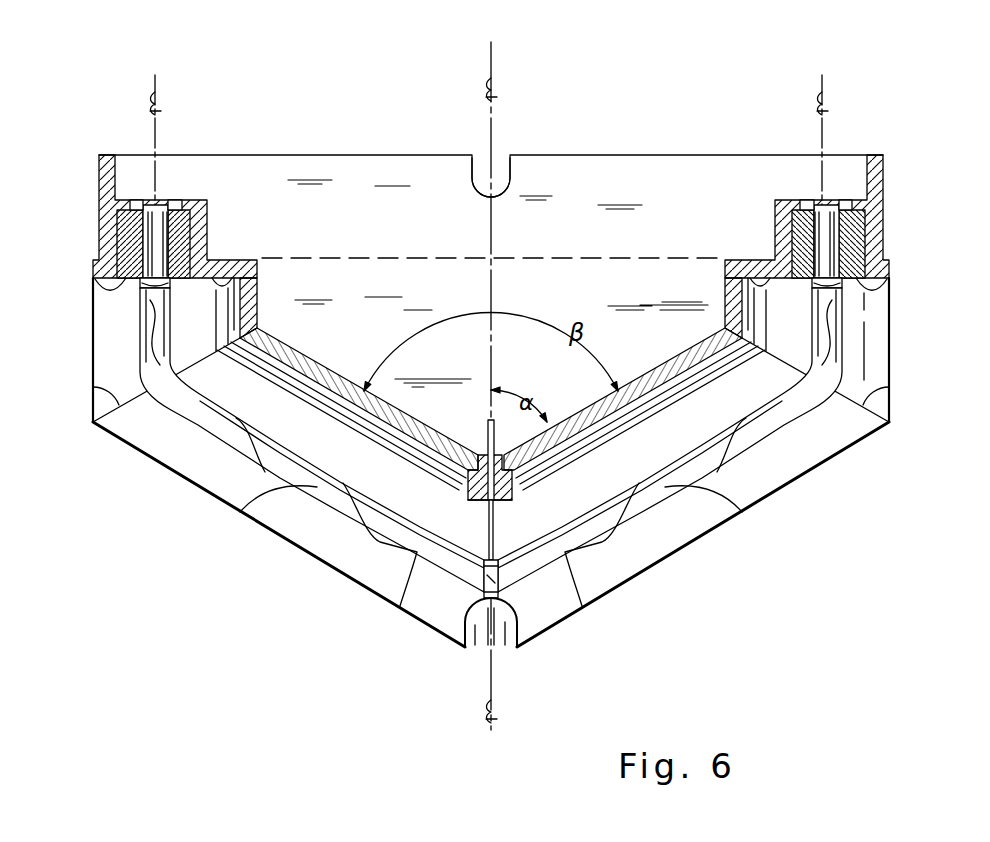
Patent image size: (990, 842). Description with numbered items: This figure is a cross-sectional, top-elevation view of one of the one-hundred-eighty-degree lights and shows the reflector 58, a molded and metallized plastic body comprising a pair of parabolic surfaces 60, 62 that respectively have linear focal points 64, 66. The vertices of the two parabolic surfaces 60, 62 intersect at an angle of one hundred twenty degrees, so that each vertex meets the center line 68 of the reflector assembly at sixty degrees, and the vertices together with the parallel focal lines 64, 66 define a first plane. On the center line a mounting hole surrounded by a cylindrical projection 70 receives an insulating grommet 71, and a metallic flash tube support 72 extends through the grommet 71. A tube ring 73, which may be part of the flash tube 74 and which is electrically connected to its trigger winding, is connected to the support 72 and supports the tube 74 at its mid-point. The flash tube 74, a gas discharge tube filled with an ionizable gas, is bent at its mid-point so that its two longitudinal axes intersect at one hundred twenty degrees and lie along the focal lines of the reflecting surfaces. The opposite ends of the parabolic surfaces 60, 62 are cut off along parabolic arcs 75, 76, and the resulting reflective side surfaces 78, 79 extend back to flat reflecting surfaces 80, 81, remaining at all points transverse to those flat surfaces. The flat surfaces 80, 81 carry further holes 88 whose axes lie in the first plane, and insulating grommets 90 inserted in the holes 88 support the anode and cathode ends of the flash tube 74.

The reflector 58 is at (284, 594).
The parabolic surface 60 is at (347, 404).
The parabolic surface 62 is at (636, 404).
The linear focal point 64 is at (421, 553).
The linear focal point 66 is at (698, 538).
The center line 68 is at (491, 122).
The cylindrical projection 70 is at (513, 491).
The insulating grommet 71 is at (484, 498).
The flash tube support 72 is at (498, 522).
The tube ring 73 is at (499, 597).
The flash tube 74 is at (240, 512).
The parabolic arc 75 is at (93, 387).
The parabolic arc 76 is at (889, 393).
The reflective side surface 78 is at (237, 306).
The reflective side surface 79 is at (743, 313).
The flat reflecting surface 80 is at (222, 282).
The flat reflecting surface 81 is at (752, 276).
The further holes 88 is at (883, 246).
The insulating grommets 90 is at (96, 284).